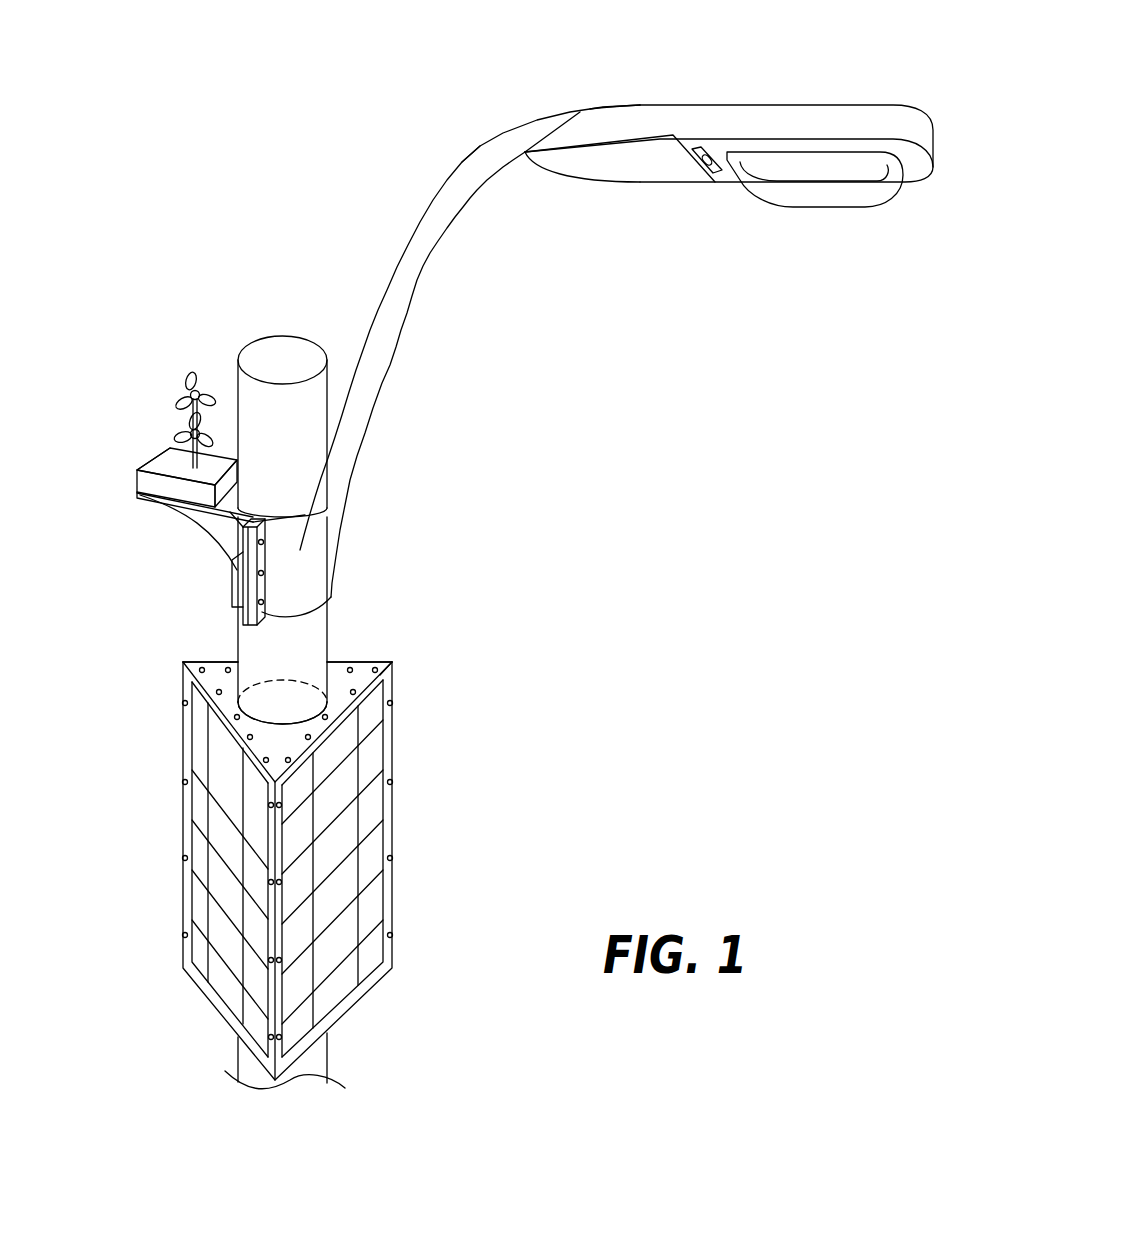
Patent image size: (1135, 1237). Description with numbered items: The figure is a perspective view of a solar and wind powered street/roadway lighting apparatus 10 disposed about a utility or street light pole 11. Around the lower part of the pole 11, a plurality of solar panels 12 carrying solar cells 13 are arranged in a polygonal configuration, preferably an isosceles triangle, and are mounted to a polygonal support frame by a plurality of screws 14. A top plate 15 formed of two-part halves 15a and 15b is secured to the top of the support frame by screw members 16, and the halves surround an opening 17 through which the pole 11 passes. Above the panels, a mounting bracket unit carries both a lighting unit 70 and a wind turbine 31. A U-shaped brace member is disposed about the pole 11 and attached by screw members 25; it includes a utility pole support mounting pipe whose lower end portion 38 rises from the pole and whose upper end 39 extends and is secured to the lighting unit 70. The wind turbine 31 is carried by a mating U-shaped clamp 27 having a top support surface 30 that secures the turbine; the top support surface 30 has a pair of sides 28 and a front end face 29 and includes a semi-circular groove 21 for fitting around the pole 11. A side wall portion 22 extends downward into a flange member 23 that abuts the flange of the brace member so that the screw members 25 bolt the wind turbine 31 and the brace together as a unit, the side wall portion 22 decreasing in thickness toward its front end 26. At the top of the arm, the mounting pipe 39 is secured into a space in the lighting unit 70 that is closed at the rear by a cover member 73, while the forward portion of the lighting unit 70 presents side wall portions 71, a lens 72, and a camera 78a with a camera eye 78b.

The solar and wind powered street/roadway lighting apparatus 10 is at (420, 90).
The lighting unit 70 is at (885, 46).
The side wall portions 71 is at (828, 112).
The lens 72 is at (850, 190).
The cover member 73 is at (628, 165).
The camera 78a is at (708, 150).
The camera eye 78b is at (712, 175).
The lower end portion 38 is at (365, 410).
The upper end of mounting pipe 39 is at (484, 168).
The utility or street light pole 11 is at (297, 445).
The opening 17 is at (297, 719).
The wind turbine 31 is at (184, 424).
The pair of sides 28 is at (237, 458).
The top support surface 30 is at (187, 477).
The front end face 29 is at (137, 471).
The U-shaped clamp 27 is at (137, 493).
The front end 26 is at (155, 500).
The semi-circular groove 21 is at (235, 507).
The side wall portion 22 is at (220, 528).
The flange member 23 is at (242, 588).
The screw members 25 is at (261, 573).
The solar panels 12 is at (184, 762).
The solar cells 13 is at (197, 842).
The screws 14 is at (391, 703).
The top plate 15 is at (358, 662).
The top plate half 15a is at (390, 662).
The top plate half 15b is at (296, 752).
The screw members 16 is at (228, 664).